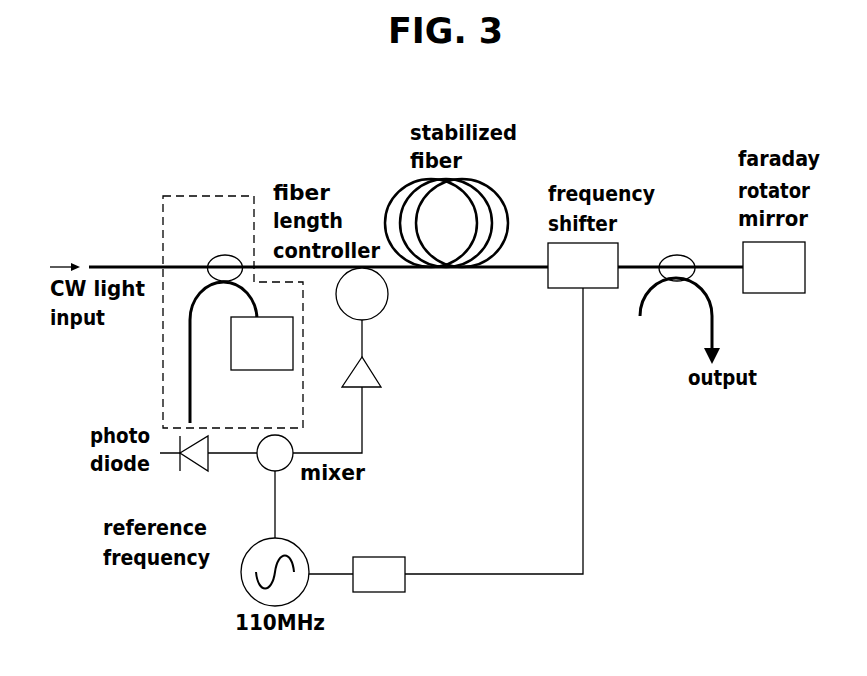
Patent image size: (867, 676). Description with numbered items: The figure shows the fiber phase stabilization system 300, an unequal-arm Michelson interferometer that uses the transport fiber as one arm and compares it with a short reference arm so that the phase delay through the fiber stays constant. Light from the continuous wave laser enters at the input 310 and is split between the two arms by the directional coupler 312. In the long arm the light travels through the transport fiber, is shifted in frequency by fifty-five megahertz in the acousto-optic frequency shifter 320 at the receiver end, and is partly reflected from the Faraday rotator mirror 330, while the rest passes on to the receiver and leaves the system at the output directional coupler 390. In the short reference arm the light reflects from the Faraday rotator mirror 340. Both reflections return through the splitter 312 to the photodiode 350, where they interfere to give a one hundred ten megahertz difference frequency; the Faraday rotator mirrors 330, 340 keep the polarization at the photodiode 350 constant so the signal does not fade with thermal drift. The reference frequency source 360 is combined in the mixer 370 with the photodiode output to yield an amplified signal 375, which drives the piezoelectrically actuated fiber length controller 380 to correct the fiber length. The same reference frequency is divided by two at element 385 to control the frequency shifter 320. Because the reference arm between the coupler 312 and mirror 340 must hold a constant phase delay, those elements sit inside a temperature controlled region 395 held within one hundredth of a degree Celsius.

The fiber phase stabilization system 300 is at (92, 591).
The continuous wave laser signal input 310 is at (47, 268).
The directional coupler 312 is at (219, 255).
The acousto-optic frequency shifter 320 is at (562, 290).
The Faraday rotator mirror 330 is at (785, 296).
The Faraday rotator mirror 340 is at (257, 372).
The photodiode 350 is at (195, 470).
The reference frequency source 360 is at (242, 580).
The mixer 370 is at (289, 468).
The amplified signal 375 is at (372, 367).
The piezoelectrically actuated fiber length controller 380 is at (389, 291).
The divide-by-two element 385 is at (395, 557).
The directional coupler 390 is at (677, 255).
The temperature controlled region 395 is at (163, 373).